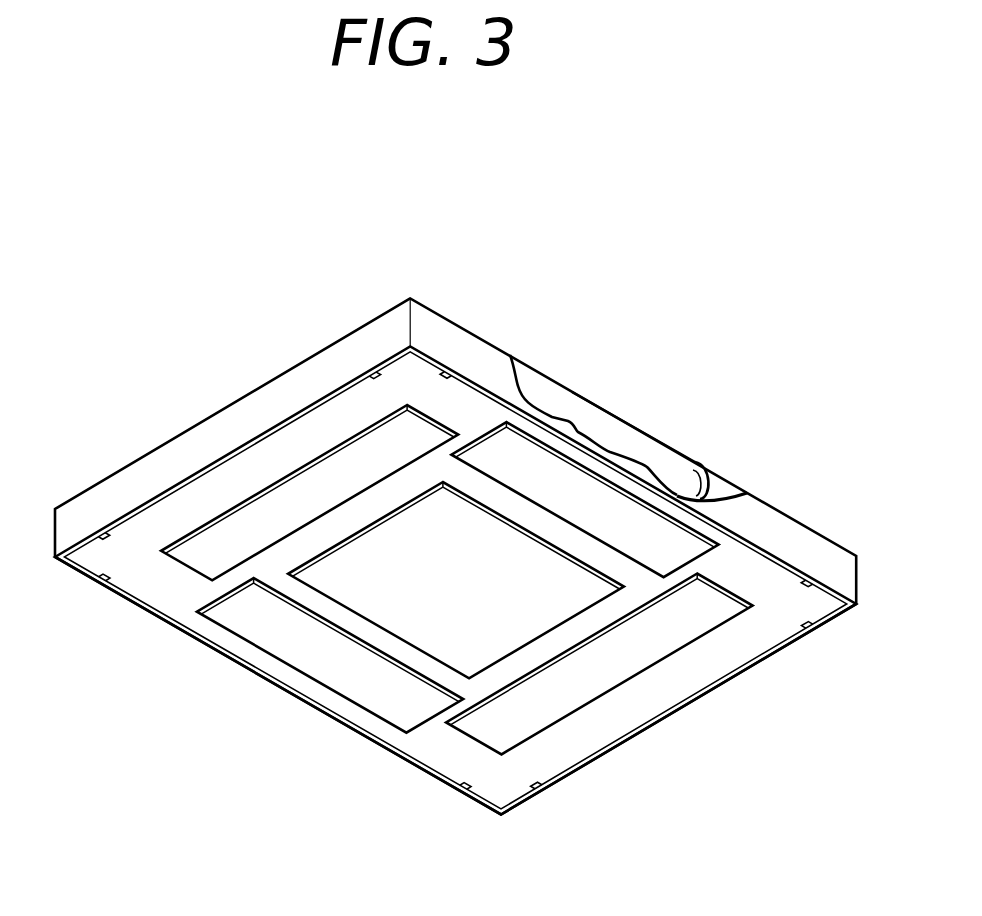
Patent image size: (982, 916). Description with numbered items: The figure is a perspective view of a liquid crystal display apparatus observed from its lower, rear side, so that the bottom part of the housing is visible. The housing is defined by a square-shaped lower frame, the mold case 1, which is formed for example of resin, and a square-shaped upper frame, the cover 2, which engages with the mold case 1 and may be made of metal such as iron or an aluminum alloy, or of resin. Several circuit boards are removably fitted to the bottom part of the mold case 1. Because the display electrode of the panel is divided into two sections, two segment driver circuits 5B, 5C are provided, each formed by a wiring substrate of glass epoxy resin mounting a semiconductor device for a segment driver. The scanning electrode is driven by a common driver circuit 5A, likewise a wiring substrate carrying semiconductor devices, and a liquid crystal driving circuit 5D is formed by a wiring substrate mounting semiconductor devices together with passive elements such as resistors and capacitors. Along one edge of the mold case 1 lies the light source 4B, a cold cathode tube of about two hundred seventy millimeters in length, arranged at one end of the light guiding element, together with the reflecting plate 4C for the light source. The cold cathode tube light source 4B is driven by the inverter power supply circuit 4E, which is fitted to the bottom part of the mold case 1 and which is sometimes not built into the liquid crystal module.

The mold case 1 is at (207, 497).
The cover 2 is at (307, 378).
The light source 4B is at (613, 427).
The reflecting plate for light source 4C is at (718, 487).
The inverter power supply circuit 4E is at (207, 555).
The common driver circuit 5A is at (578, 687).
The segment driver circuit 5B is at (650, 557).
The segment driver circuit 5C is at (308, 653).
The liquid crystal driving circuit 5D is at (398, 627).